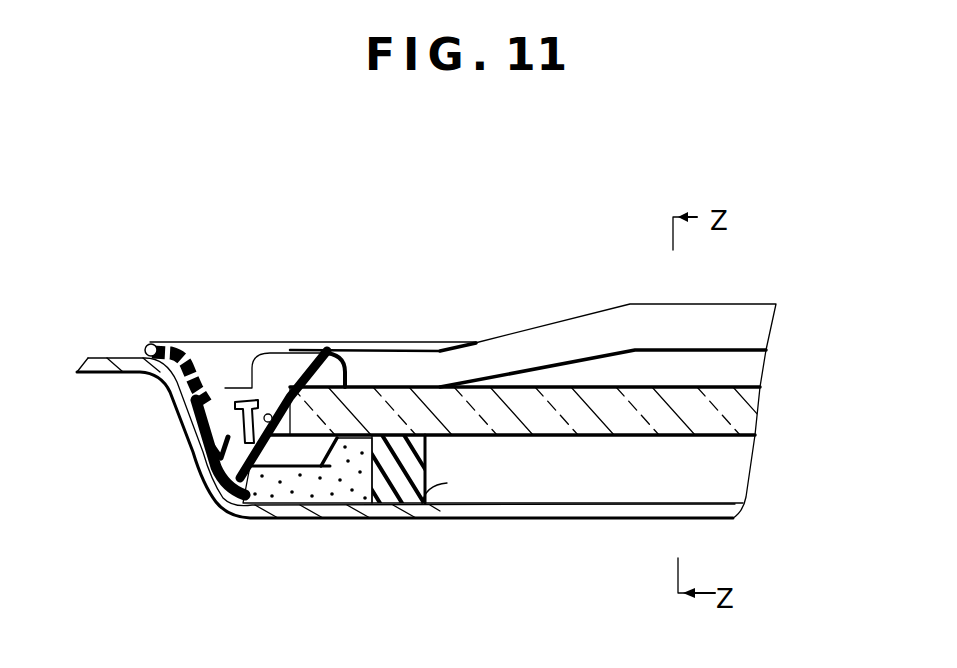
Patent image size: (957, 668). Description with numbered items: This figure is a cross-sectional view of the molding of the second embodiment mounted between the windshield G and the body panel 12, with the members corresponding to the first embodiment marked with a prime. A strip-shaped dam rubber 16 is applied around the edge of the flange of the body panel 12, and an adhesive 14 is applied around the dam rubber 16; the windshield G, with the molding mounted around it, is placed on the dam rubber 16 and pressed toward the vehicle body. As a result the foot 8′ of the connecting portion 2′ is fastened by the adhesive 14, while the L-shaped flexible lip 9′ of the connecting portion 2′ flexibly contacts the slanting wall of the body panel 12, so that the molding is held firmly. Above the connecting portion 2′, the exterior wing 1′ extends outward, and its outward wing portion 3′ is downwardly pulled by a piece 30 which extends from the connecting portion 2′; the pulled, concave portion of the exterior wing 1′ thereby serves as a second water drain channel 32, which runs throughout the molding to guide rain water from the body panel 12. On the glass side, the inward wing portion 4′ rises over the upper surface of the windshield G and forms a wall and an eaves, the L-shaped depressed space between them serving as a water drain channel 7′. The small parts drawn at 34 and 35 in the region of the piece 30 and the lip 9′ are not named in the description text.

The body panel 12 is at (112, 367).
The outward wing portion 3′ is at (151, 345).
The second water drain channel 32 is at (222, 362).
The exterior wing 1′ is at (277, 360).
The inward wing portion 4′ is at (327, 362).
The water drain channel 7′ is at (694, 362).
The clip tab 34 is at (263, 415).
The piece 30 is at (257, 419).
The lip 35 is at (240, 421).
The flexible lip 9′ is at (212, 476).
The connecting portion 2′ is at (243, 503).
The foot 8′ is at (297, 446).
The adhesive 14 is at (353, 477).
The dam rubber 16 is at (447, 490).
The windshield G is at (557, 428).